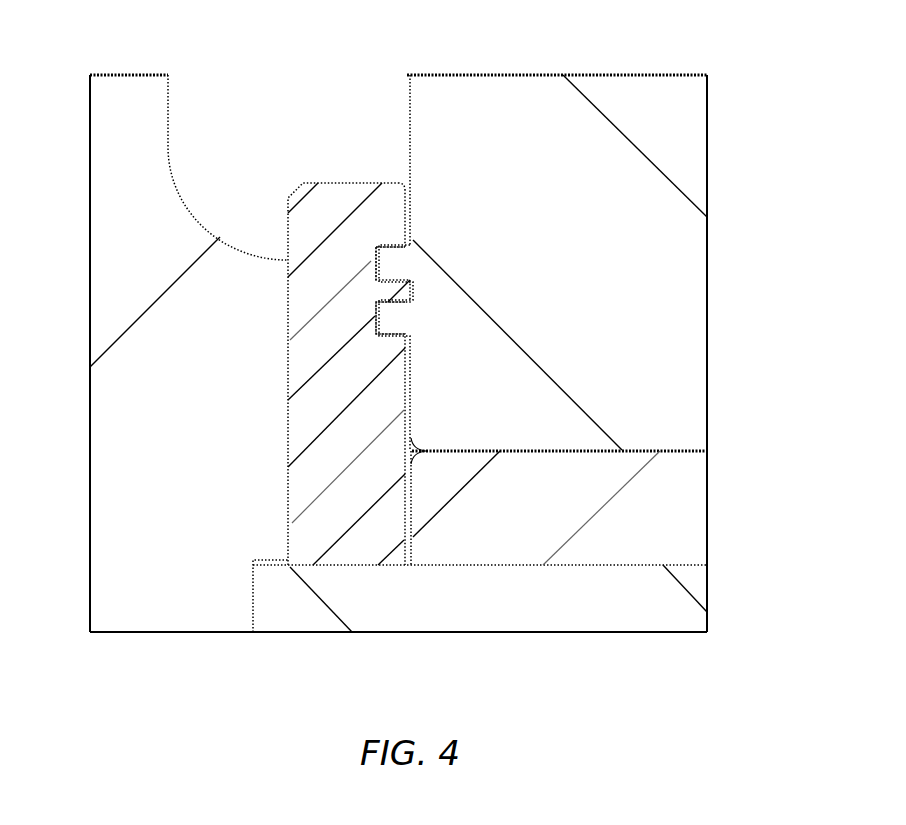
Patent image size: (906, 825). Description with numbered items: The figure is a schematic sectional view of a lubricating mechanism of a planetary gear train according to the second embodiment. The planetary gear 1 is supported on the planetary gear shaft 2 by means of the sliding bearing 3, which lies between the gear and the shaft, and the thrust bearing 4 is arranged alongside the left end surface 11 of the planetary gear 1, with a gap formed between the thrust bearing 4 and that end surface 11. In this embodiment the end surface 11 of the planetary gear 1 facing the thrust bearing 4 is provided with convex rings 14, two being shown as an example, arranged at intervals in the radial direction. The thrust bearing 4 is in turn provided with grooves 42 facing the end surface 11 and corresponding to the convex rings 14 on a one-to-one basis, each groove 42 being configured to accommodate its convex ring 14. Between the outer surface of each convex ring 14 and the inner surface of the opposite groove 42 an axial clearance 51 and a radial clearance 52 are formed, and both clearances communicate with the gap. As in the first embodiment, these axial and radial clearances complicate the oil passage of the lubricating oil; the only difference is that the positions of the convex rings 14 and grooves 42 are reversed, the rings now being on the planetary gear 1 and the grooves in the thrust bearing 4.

The planetary gear 1 is at (537, 230).
The end surface 11 is at (398, 88).
The convex ring 14 is at (395, 265).
The planetary gear shaft 2 is at (578, 607).
The sliding bearing 3 is at (668, 513).
The thrust bearing 4 is at (225, 357).
The groove 42 is at (364, 258).
The axial clearance 51 is at (386, 321).
The radial clearance 52 is at (393, 235).